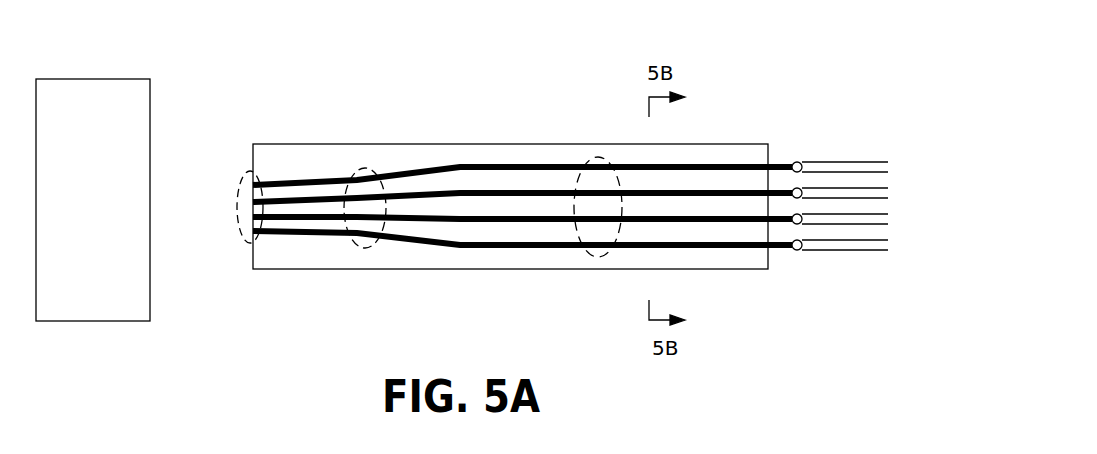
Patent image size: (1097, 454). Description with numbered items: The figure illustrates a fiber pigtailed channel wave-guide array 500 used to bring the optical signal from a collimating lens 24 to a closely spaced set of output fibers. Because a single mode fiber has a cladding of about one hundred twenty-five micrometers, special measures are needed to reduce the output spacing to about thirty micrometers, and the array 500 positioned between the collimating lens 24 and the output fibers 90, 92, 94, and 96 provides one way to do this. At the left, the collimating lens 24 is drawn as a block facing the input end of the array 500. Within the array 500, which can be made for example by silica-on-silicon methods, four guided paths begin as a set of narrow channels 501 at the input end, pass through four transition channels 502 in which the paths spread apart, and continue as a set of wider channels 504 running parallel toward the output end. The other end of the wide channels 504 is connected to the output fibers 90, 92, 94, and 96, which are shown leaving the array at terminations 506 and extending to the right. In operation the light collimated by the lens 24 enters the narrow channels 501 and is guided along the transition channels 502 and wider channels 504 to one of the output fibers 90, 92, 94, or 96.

The output collimating lens 24 is at (93, 79).
The fiber pigtailed channel wave-guide array 500 is at (474, 136).
The narrow channels 501 is at (242, 178).
The transition channels 502 is at (359, 160).
The wider channels 504 is at (583, 154).
The connector terminals 506 is at (789, 145).
The output fiber 90 is at (818, 160).
The output fiber 92 is at (860, 187).
The output fiber 94 is at (868, 223).
The output fiber 96 is at (822, 245).